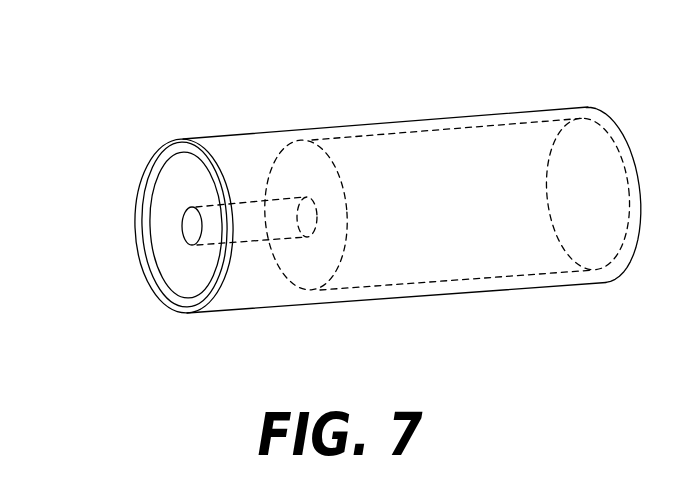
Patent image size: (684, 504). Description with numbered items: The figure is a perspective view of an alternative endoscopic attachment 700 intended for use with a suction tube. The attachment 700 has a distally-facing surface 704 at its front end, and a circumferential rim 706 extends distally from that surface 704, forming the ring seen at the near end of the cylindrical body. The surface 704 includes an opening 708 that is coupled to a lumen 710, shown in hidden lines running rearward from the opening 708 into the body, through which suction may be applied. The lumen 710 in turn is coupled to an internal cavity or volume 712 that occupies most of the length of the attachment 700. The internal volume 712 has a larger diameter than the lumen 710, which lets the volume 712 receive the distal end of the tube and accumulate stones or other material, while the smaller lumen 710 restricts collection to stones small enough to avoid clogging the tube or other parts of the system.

The attachment 700 is at (236, 137).
The distally-facing surface 704 is at (182, 180).
The circumferential rim 706 is at (152, 243).
The opening 708 is at (183, 210).
The lumen 710 is at (244, 200).
The internal cavity or volume 712 is at (423, 169).